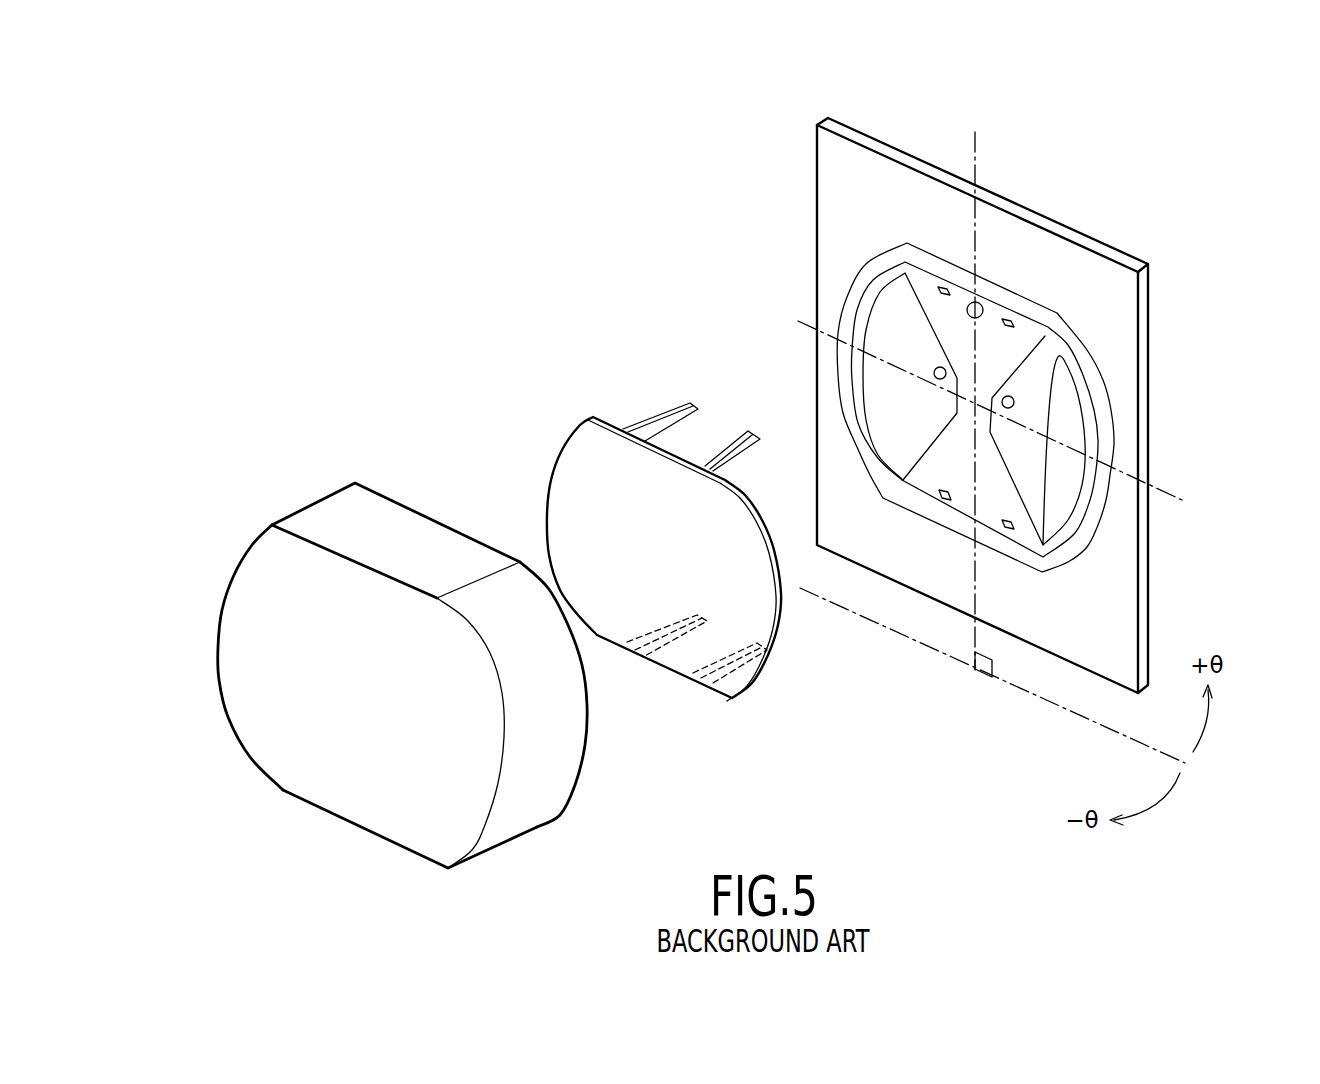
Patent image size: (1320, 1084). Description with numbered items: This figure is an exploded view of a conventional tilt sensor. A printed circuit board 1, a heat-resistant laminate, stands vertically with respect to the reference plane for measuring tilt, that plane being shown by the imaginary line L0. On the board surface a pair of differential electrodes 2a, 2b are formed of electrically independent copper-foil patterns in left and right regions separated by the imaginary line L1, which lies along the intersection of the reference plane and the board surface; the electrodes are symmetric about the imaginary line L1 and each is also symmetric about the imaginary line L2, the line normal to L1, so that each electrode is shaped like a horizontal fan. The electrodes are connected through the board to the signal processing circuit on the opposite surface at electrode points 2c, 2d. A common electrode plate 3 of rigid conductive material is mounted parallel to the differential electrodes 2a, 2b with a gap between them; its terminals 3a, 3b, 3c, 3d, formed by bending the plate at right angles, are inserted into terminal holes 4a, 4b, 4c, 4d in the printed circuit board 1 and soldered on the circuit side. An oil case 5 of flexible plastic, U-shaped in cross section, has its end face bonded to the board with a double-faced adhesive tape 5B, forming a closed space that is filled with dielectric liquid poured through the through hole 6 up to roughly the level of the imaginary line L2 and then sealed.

The printed circuit board 1 is at (1148, 323).
The differential electrode 2a is at (898, 288).
The differential electrode 2b is at (1058, 517).
The electrode point 2c is at (940, 363).
The electrode point 2d is at (1015, 398).
The common electrode plate 3 is at (570, 448).
The terminal 3a is at (678, 403).
The terminal 3b is at (738, 440).
The terminal 3c is at (683, 635).
The terminal 3d is at (748, 655).
The terminal hole 4a is at (945, 285).
The terminal hole 4b is at (1008, 320).
The terminal hole 4c is at (947, 505).
The terminal hole 4d is at (1008, 532).
The oil case 5 is at (560, 760).
The double-faced adhesive tape 5B is at (1093, 380).
The through hole 6 is at (982, 306).
The imaginary line L0 is at (1117, 733).
The imaginary line L1 is at (977, 162).
The imaginary line L2 is at (1163, 488).